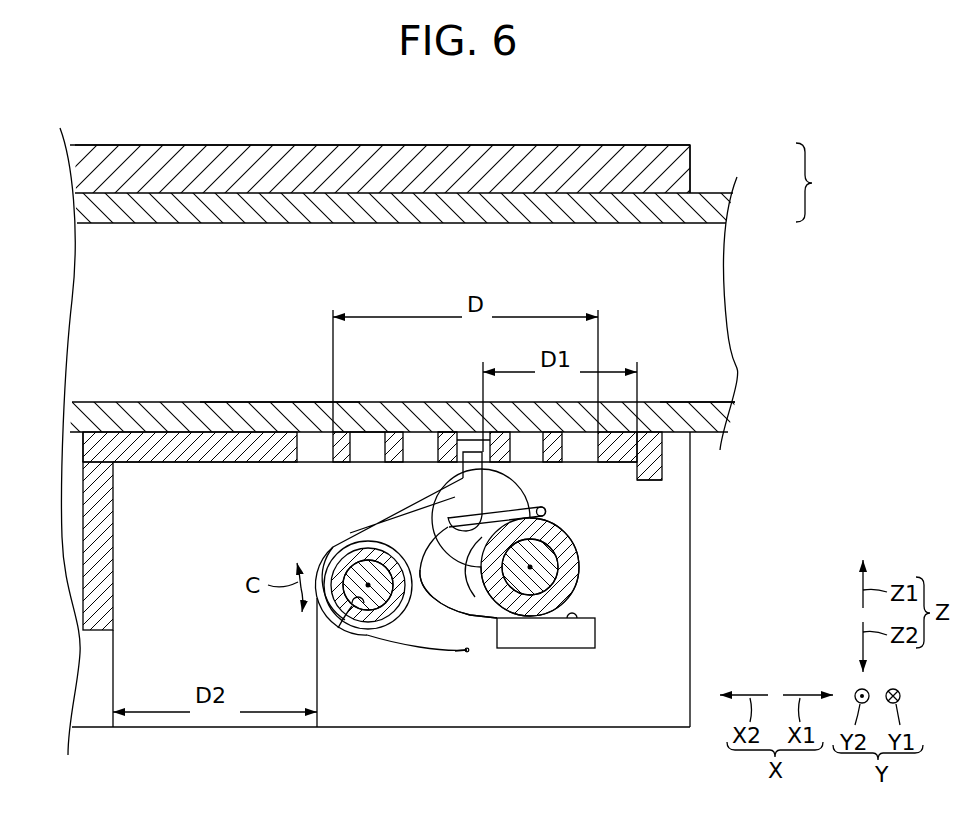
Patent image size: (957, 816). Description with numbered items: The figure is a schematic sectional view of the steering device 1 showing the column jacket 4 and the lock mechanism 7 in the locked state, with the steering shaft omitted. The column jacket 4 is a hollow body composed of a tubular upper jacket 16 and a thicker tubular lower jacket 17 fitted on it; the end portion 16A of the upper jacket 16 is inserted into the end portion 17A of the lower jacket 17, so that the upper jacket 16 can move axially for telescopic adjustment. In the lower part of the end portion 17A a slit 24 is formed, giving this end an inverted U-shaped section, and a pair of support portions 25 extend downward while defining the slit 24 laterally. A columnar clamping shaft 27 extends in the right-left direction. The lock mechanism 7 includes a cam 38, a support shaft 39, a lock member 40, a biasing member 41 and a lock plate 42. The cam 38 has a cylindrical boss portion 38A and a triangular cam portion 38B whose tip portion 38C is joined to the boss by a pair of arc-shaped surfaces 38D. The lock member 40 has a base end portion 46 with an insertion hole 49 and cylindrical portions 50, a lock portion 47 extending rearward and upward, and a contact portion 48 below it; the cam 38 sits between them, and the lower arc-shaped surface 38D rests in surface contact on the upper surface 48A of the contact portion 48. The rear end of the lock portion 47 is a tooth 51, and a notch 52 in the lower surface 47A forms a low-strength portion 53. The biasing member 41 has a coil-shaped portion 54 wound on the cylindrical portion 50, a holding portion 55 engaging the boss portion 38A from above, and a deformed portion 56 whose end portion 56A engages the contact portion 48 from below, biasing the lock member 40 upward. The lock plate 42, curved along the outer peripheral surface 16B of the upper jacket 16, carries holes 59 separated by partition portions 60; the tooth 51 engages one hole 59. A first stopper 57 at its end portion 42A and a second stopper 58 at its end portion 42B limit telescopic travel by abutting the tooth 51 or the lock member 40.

The steering device 1 is at (400, 795).
The column jacket 4 is at (814, 182).
The lock mechanism 7 is at (533, 660).
The upper jacket 16 is at (690, 210).
The end portion of the upper jacket 16A is at (282, 404).
The outer peripheral surface of the upper jacket 16B is at (700, 435).
The lower jacket 17 is at (688, 168).
The end portion of the lower jacket 17A is at (670, 150).
The slit 24 is at (691, 660).
The support portion 25 is at (649, 710).
The clamping shaft 27 is at (552, 567).
The cam 38 is at (565, 542).
The boss portion 38A is at (567, 588).
The cam portion 38B is at (475, 597).
The tip portion 38C is at (442, 607).
The arc-shaped surface 38D is at (497, 618).
The support shaft 39 is at (336, 546).
The lock member 40 is at (320, 614).
The biasing member 41 is at (395, 657).
The lock plate 42 is at (645, 447).
The end portion of the lock plate 42A is at (655, 442).
The end portion of the lock plate 42B is at (97, 443).
The base end portion 46 is at (342, 623).
The lock portion 47 is at (413, 497).
The lower surface of the lock portion 47A is at (372, 522).
The contact portion 48 is at (587, 635).
The upper surface of the contact portion 48A is at (577, 623).
The insertion hole 49 is at (366, 622).
The cylindrical portion 50 is at (330, 636).
The tooth 51 is at (472, 447).
The notch 52 is at (483, 523).
The low-strength portion 53 is at (440, 500).
The coil-shaped portion 54 is at (325, 558).
The holding portion 55 is at (545, 512).
The deformed portion 56 is at (427, 655).
The end portion of the deformed portion 56A is at (457, 655).
The first stopper 57 is at (655, 470).
The second stopper 58 is at (92, 545).
The hole 59 is at (90, 146).
The partition portion 60 is at (395, 440).